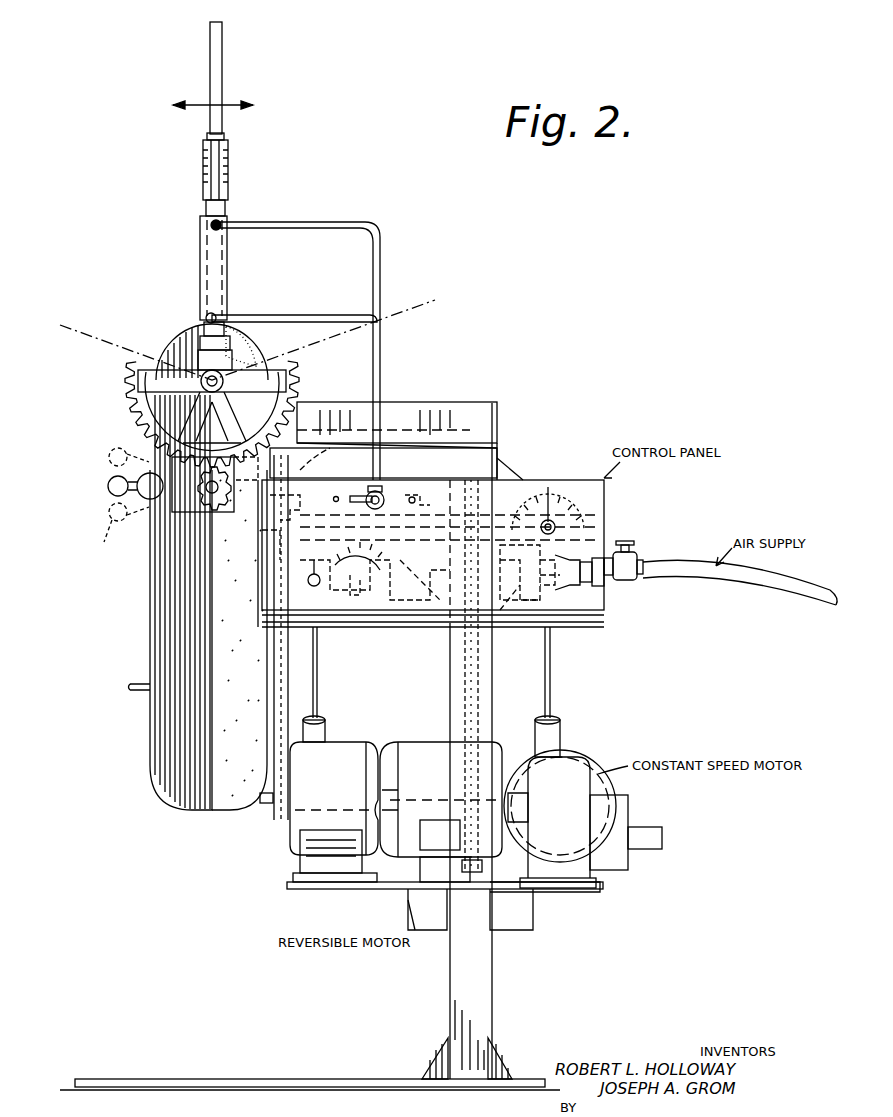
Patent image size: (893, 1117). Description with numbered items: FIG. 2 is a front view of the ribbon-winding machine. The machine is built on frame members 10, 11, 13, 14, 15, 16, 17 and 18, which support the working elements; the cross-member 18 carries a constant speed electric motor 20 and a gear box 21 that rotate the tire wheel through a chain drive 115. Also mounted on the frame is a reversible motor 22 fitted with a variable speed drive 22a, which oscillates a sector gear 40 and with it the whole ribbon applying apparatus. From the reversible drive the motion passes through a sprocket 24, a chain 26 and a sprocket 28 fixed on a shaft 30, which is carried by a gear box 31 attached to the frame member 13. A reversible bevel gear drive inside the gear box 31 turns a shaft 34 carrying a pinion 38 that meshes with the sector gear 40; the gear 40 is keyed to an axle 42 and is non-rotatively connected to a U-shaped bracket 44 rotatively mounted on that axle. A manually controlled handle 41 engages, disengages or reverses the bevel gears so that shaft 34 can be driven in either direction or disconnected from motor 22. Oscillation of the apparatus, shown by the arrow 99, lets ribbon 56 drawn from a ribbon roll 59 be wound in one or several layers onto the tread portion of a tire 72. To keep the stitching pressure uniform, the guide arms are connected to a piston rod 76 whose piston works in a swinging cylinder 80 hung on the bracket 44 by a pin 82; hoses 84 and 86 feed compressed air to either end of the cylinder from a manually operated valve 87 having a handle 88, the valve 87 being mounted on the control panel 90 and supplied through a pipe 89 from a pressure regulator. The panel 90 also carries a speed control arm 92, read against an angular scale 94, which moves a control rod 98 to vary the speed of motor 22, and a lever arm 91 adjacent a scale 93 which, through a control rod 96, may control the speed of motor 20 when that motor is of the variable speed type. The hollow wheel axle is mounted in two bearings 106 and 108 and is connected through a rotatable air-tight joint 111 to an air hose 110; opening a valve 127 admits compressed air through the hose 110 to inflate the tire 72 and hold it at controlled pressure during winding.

The frame member 10 is at (238, 1078).
The frame member 11 is at (489, 958).
The frame member 13 is at (484, 411).
The frame member 14 is at (508, 470).
The frame member 15 is at (560, 546).
The frame member 16 is at (358, 592).
The frame member 17 is at (325, 508).
The cross-member 18 is at (376, 900).
The constant speed electric motor 20 is at (594, 773).
The gear box 21 is at (576, 824).
The reversible motor 22 is at (408, 744).
The variable speed drive 22a is at (346, 742).
The sprocket 24 is at (272, 806).
The chain 26 is at (300, 773).
The sprocket 28 is at (325, 432).
The shaft 30 is at (300, 494).
The gear box 31 is at (288, 455).
The shaft 34 is at (218, 500).
The pinion 38 is at (175, 495).
The sector gear 40 is at (130, 381).
The manually controlled handle 41 is at (108, 486).
The axle 42 is at (224, 374).
The U-shaped bracket 44 is at (210, 368).
The ribbon 56 is at (180, 806).
The ribbon roll 59 is at (210, 60).
The tire 72 is at (226, 812).
The piston rod 76 is at (205, 182).
The swinging cylinder 80 is at (225, 258).
The pin 82 is at (224, 333).
The hose 84 is at (303, 314).
The hose 86 is at (309, 220).
The manually operated valve 87 is at (384, 488).
The handle 88 is at (358, 496).
The pipe 89 is at (423, 490).
The control panel 90 is at (606, 492).
The manually operated lever arm 91 is at (553, 494).
The speed control arm 92 is at (313, 582).
The scale 93 is at (584, 507).
The angular scale 94 is at (332, 556).
The control rod 96 is at (556, 678).
The control rod 98 is at (318, 678).
The arrow 99 is at (234, 102).
The bearing 106 is at (388, 582).
The bearing 108 is at (504, 620).
The air hose 110 is at (676, 578).
The rotatable air-tight joint 111 is at (579, 581).
The chain drive 115 is at (462, 711).
The valve 127 is at (620, 580).